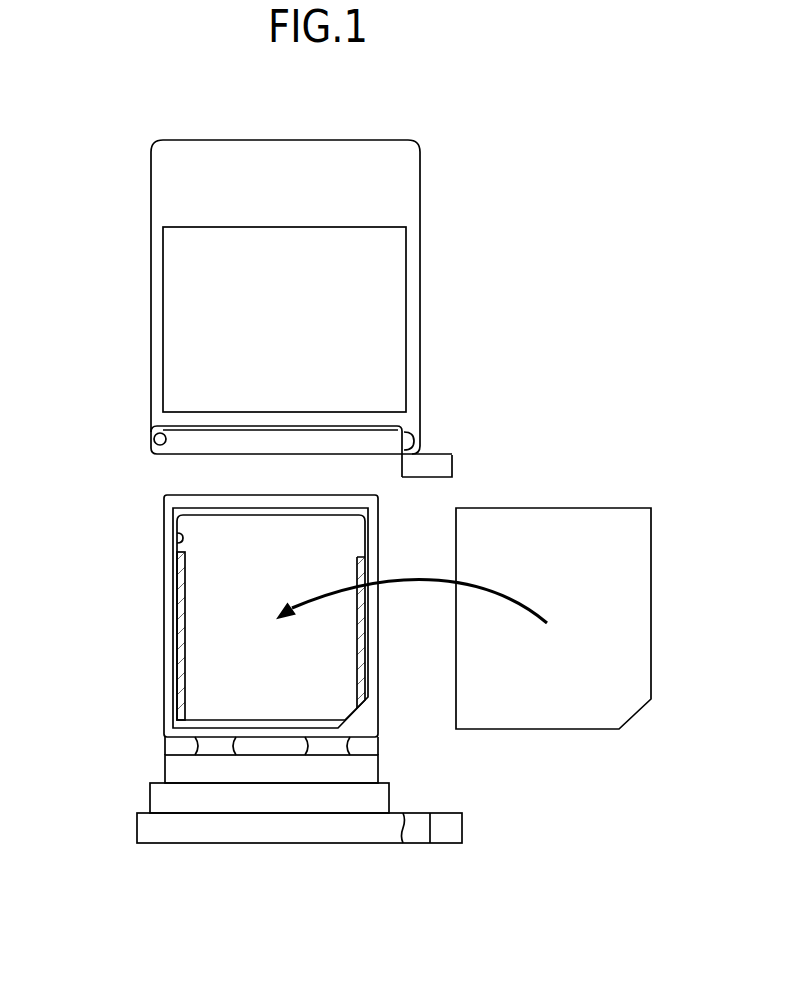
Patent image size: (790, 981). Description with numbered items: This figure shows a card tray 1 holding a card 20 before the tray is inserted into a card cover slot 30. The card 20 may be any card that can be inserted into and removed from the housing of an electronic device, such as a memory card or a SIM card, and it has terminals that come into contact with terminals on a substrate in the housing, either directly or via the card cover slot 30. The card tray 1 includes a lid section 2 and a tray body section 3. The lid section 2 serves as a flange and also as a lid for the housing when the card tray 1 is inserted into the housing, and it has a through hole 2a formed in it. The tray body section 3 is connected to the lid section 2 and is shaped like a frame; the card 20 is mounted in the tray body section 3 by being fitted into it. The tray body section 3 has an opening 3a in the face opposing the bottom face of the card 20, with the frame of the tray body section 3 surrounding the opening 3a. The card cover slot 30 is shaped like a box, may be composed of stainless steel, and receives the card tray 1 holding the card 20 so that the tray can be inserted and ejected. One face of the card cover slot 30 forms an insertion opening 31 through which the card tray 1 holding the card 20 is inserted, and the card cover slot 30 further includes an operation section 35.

The card tray 1 is at (146, 878).
The lid section 2 is at (108, 755).
The through hole 2a is at (404, 829).
The tray body section 3 is at (108, 495).
The opening 3a is at (172, 537).
The card 20 is at (651, 560).
The card cover slot 30 is at (421, 178).
The insertion opening 31 is at (151, 444).
The operation section 35 is at (434, 455).